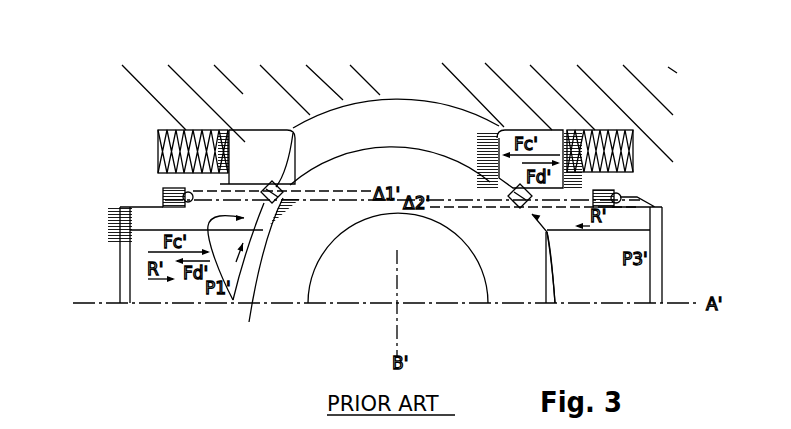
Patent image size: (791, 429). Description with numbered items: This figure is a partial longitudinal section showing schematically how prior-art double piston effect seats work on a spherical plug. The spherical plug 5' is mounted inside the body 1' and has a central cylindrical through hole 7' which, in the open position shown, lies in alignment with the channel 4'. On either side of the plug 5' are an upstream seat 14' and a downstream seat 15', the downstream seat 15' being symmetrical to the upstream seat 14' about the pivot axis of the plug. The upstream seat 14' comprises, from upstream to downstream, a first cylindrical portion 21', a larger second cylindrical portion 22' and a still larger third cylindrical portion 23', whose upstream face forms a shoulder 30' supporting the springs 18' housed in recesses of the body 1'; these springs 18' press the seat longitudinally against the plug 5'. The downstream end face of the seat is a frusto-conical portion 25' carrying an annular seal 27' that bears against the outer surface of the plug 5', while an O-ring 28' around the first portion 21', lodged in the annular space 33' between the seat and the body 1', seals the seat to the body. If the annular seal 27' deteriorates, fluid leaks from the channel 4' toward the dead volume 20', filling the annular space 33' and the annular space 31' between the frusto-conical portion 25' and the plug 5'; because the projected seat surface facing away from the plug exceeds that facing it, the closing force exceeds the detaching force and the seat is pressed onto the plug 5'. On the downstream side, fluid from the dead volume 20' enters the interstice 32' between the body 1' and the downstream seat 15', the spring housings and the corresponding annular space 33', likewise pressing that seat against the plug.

The body 1' is at (399, 86).
The channel 4' is at (385, 275).
The spherical plug 5' is at (286, 316).
The central cylindrical through hole 7' is at (398, 281).
The upstream seat 14' is at (243, 110).
The downstream seat 15' is at (580, 110).
The springs 18' is at (410, 103).
The dead volume 20' is at (387, 105).
The first cylindrical portion 21' is at (352, 287).
The second cylindrical portion 22' is at (402, 170).
The third cylindrical portion 23' is at (400, 103).
The frusto-conical portion 25' is at (410, 270).
The annular seal 27' is at (396, 205).
The O-ring 28' is at (394, 210).
The shoulder 30' is at (218, 105).
The annular space 31' is at (260, 251).
The interstice 32' is at (515, 110).
The annular space 33' is at (394, 212).